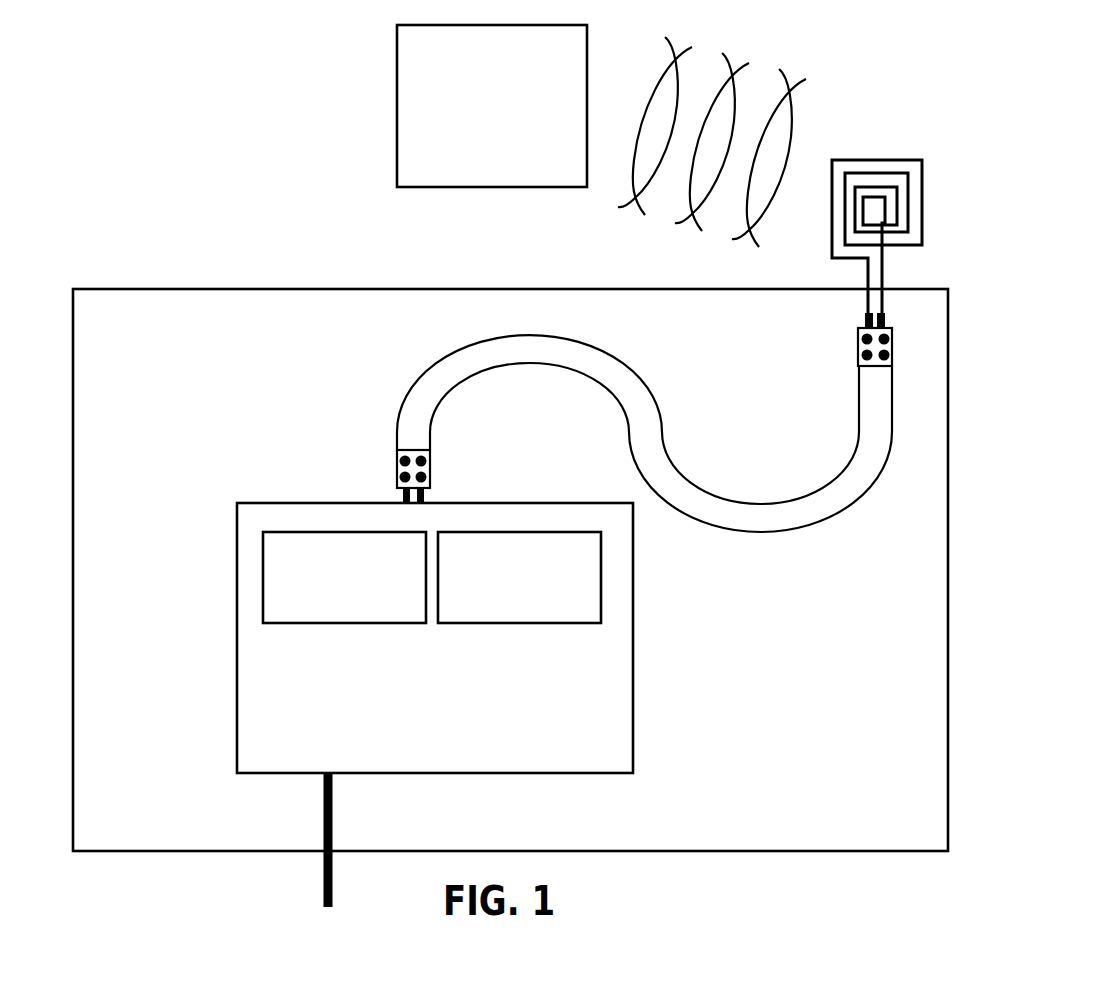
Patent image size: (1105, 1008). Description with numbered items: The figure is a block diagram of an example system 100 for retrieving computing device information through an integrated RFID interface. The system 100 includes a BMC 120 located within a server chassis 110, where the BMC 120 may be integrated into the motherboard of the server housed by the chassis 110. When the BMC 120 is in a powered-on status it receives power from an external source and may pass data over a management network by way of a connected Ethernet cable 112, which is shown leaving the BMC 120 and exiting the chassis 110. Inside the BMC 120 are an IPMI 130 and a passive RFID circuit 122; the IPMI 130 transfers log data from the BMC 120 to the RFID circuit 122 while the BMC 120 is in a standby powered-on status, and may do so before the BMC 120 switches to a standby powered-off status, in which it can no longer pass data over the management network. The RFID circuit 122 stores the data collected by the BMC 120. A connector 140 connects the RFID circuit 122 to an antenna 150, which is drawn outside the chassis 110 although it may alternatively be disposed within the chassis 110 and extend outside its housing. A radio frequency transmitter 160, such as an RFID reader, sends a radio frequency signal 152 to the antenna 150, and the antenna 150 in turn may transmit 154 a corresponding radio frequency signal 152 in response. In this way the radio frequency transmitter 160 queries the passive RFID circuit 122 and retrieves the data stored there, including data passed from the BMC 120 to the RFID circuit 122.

The system 100 is at (1006, 738).
The server chassis 110 is at (949, 366).
The Ethernet cable 112 is at (325, 872).
The BMC 120 is at (435, 638).
The RFID circuit 122 is at (519, 577).
The IPMI 130 is at (344, 577).
The connector 140 is at (523, 333).
The antenna 150 is at (922, 160).
The radio frequency signal 152 is at (779, 69).
The transmit 154 is at (722, 53).
The radio frequency transmitter 160 is at (492, 106).